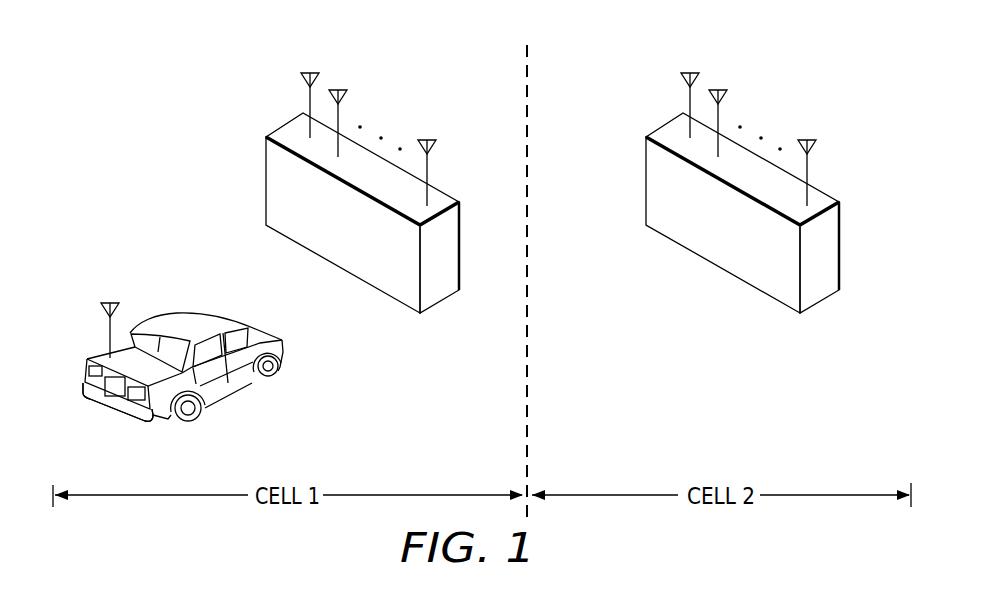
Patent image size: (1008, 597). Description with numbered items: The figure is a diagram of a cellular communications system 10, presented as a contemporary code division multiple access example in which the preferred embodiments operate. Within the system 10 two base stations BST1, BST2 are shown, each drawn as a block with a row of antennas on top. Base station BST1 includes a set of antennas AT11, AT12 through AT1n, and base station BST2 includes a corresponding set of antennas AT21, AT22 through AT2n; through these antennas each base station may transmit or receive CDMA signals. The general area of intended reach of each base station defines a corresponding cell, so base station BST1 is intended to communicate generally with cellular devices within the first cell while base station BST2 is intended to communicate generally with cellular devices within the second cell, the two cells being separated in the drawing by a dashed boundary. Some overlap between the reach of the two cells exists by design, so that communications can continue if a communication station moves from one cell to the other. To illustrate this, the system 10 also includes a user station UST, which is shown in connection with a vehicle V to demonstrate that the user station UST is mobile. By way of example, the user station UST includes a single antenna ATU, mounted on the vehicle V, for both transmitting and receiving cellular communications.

The cellular communications system 10 is at (191, 50).
The antenna AT11 is at (308, 103).
The antenna AT12 is at (342, 112).
The antenna AT1n is at (431, 162).
The antenna AT21 is at (688, 103).
The antenna AT22 is at (722, 112).
The antenna AT2n is at (811, 162).
The base station BST1 is at (358, 253).
The base station BST2 is at (738, 253).
The vehicle V is at (188, 318).
The antenna ATU is at (108, 332).
The user station UST is at (94, 416).